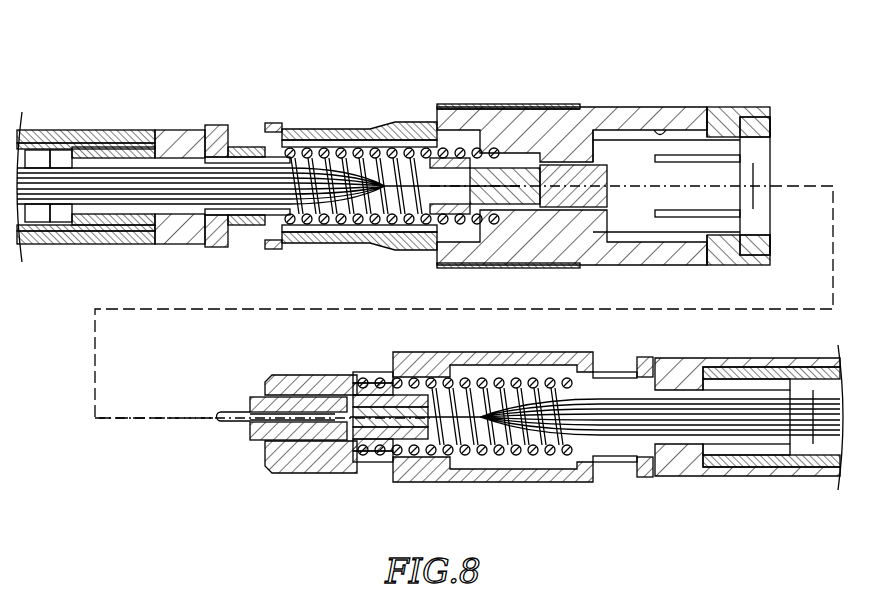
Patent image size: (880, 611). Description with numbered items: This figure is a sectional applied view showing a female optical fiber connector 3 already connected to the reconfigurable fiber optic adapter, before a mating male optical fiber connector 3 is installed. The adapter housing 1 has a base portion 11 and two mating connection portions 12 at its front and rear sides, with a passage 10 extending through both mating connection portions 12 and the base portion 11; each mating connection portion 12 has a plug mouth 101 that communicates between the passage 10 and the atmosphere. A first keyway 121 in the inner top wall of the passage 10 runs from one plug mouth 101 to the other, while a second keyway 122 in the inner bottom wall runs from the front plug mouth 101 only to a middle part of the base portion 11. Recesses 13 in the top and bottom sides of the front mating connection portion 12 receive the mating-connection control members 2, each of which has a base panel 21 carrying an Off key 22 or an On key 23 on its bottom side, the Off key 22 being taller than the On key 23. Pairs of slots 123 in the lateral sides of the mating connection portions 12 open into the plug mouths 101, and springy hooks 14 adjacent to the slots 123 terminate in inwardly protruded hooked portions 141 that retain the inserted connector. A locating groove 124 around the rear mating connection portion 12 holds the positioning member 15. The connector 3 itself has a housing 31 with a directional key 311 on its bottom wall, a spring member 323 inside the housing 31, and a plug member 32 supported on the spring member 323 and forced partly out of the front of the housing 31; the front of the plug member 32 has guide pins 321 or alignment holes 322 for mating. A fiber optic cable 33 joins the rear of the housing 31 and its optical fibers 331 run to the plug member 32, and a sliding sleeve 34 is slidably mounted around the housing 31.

The housing 1 is at (692, 88).
The mating-connection control member 2 is at (722, 191).
The optical fiber connector 3 is at (469, 416).
The passage 10 is at (638, 210).
The base portion 11 is at (590, 106).
The mating connection portion 12 is at (660, 58).
The recess 13 is at (712, 106).
The springy hook 14 is at (722, 172).
The positioning member 15 is at (512, 104).
The base panel 21 is at (770, 109).
The Off key 22 is at (748, 132).
The On key 23 is at (722, 247).
The housing 31 is at (293, 380).
The plug member 32 is at (250, 403).
The fiber optic cable 33 is at (740, 358).
The sliding sleeve 34 is at (500, 352).
The plug mouth 101 is at (760, 247).
The first keyway 121 is at (660, 129).
The second keyway 122 is at (700, 238).
The slot 123 is at (725, 209).
The locating groove 124 is at (552, 104).
The hooked portion 141 is at (755, 176).
The directional key 311 is at (293, 462).
The guide pin 321 is at (233, 422).
The alignment hole 322 is at (567, 225).
The spring member 323 is at (470, 455).
The optical fiber 331 is at (617, 412).